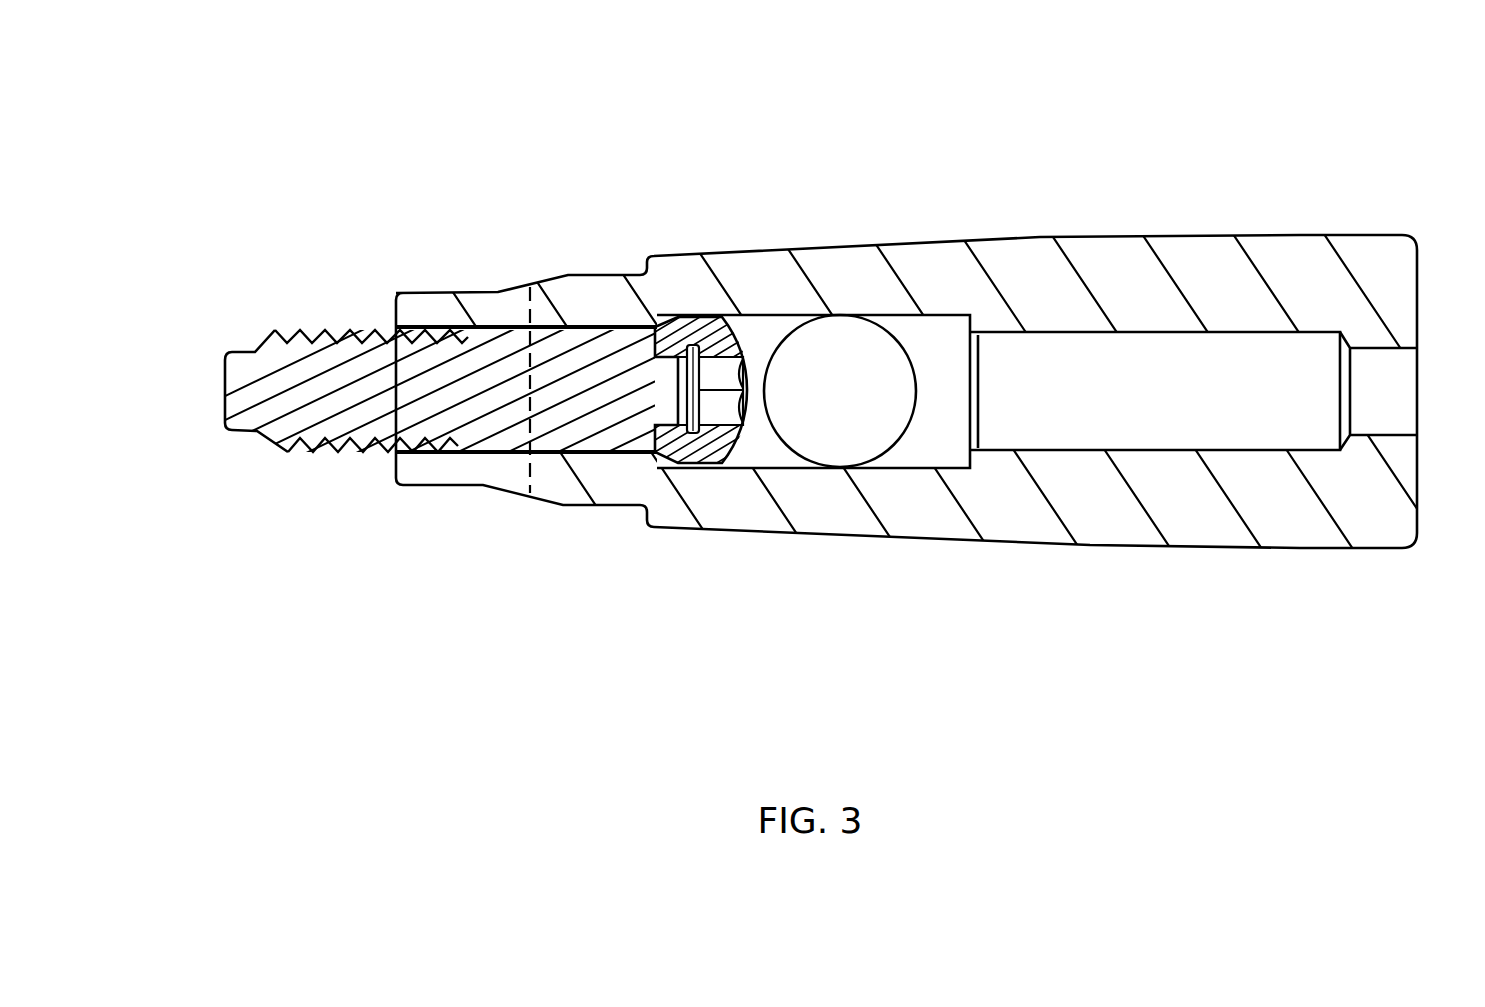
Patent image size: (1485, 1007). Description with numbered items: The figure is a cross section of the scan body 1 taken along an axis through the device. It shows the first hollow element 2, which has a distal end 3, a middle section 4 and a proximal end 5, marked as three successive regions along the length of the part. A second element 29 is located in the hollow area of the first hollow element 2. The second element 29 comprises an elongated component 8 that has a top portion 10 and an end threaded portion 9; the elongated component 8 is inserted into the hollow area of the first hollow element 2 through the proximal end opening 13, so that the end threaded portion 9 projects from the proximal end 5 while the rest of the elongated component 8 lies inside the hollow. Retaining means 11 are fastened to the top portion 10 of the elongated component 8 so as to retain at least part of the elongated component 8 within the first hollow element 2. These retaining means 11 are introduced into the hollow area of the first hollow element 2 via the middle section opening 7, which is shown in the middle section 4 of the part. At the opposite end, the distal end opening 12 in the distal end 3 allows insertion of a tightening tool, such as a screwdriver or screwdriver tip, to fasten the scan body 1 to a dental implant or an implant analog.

The scan body 1 is at (348, 136).
The first hollow element 2 is at (1152, 555).
The distal end 3 is at (1397, 227).
The middle section 4 is at (665, 227).
The proximal end 5 is at (662, 227).
The middle section opening 7 is at (857, 413).
The elongated component 8 is at (530, 402).
The end threaded portion 9 is at (322, 400).
The top portion 10 is at (640, 395).
The retaining means 11 is at (715, 395).
The distal end opening 12 is at (1377, 383).
The proximal end opening 13 is at (380, 457).
The second element 29 is at (210, 373).